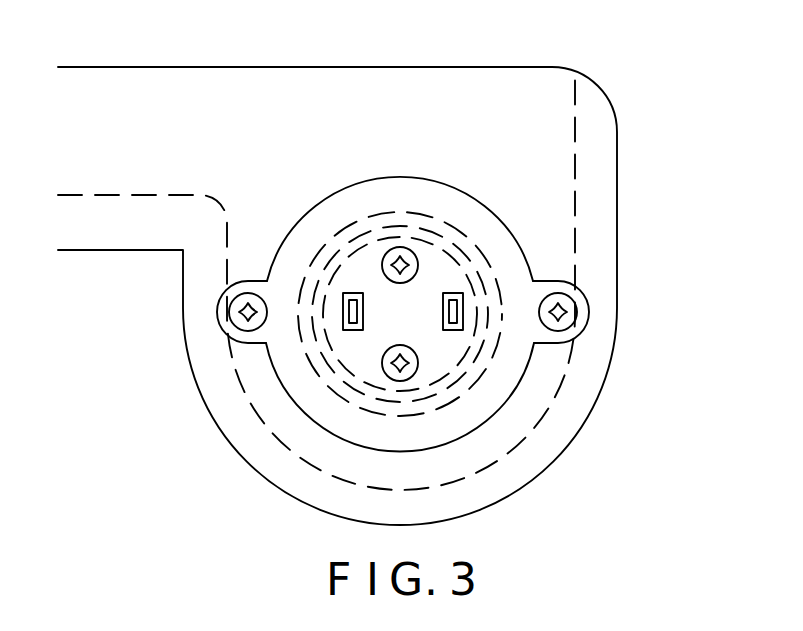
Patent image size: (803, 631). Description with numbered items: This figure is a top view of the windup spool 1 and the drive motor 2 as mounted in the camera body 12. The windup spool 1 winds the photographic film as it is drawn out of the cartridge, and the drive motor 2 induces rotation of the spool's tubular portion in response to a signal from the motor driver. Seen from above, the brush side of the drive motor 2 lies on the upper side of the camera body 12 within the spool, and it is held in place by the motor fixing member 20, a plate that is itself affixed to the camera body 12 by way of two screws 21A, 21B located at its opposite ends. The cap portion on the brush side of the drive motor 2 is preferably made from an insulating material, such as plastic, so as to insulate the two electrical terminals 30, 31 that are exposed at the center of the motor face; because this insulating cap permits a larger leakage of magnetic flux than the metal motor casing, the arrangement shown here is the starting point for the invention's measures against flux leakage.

The camera body 12 is at (445, 75).
The windup spool 1 is at (483, 262).
The drive motor 2 is at (477, 288).
The motor fixing member 20 is at (520, 352).
The screw 21A is at (233, 326).
The screw 21B is at (570, 305).
The electrical terminal 30 is at (350, 330).
The electrical terminal 31 is at (453, 330).